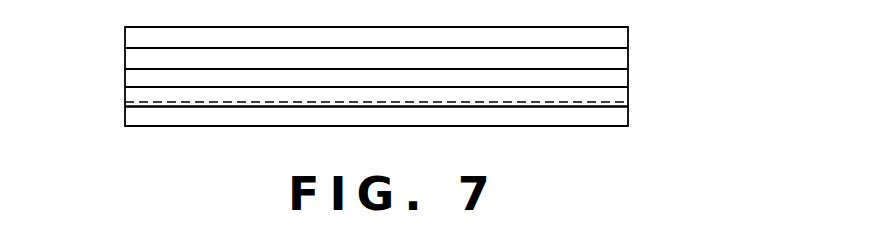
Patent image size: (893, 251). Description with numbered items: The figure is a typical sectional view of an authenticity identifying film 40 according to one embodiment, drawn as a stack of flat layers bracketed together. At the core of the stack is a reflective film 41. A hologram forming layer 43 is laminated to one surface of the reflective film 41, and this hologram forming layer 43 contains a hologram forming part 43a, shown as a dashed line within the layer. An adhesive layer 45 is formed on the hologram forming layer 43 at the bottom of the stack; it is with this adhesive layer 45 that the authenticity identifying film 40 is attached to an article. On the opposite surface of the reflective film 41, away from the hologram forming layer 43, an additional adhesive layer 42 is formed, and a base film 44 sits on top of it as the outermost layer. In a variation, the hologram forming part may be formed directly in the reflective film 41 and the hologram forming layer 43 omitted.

The authenticity identifying film 40 is at (739, 0).
The reflective film 41 is at (622, 79).
The additional adhesive layer 42 is at (622, 58).
The hologram forming layer 43 is at (620, 97).
The hologram forming part 43a is at (157, 102).
The base film 44 is at (623, 35).
The adhesive layer 45 is at (620, 118).